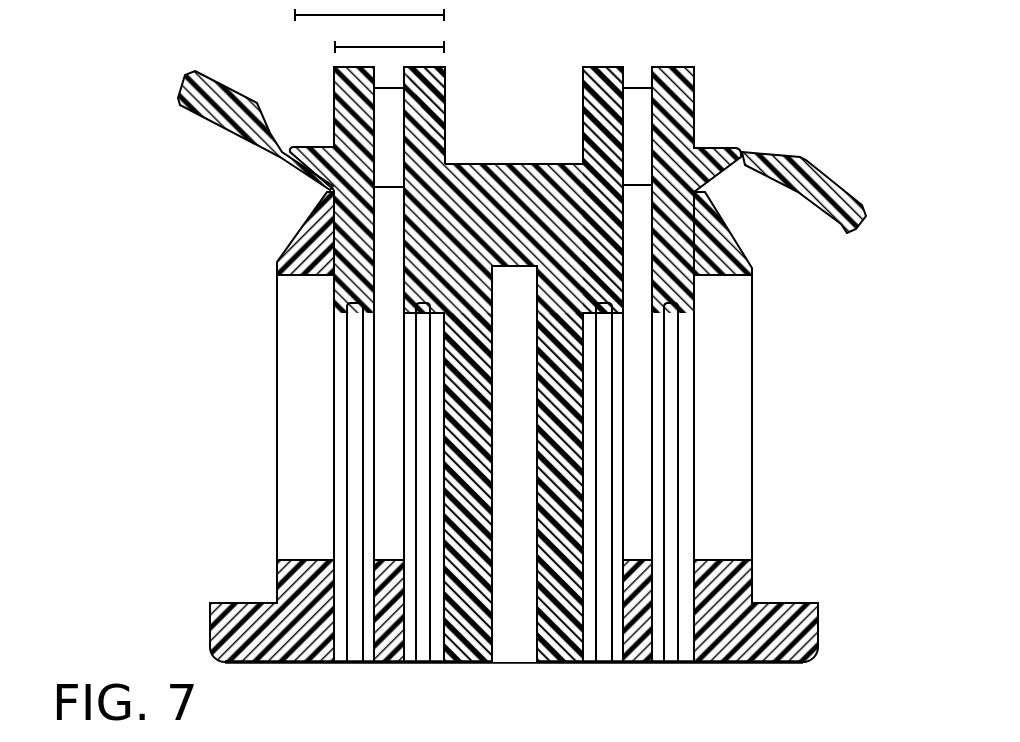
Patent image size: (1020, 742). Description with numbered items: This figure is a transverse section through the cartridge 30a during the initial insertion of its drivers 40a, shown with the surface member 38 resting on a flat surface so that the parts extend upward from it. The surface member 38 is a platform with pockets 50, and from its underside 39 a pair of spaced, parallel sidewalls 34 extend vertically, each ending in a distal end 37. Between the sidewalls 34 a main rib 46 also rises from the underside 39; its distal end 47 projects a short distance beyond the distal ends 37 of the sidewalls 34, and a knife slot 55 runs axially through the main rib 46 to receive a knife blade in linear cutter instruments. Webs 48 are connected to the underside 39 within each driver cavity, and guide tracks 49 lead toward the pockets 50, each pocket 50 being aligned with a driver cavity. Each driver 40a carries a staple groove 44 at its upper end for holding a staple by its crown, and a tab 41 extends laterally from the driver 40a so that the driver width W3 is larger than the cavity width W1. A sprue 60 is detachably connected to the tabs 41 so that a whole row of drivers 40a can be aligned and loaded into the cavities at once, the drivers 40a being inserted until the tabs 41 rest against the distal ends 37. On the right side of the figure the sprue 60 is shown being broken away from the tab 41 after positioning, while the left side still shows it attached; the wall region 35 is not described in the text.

The cartridge 30a is at (755, 427).
The sidewall 34 is at (283, 572).
The side wall 35 is at (297, 422).
The distal end 37 is at (730, 243).
The surface member 38 is at (753, 647).
The underside 39 is at (752, 600).
The driver 40a is at (687, 95).
The tab 41 is at (303, 168).
The staple groove 44 is at (672, 304).
The main rib 46 is at (452, 160).
The distal end 47 is at (530, 170).
The web 48 is at (390, 653).
The guide track 49 is at (340, 653).
The pocket 50 is at (618, 662).
The knife slot 55 is at (527, 652).
The sprue 60 is at (205, 100).
The cavity width W1 is at (420, 48).
The driver width W3 is at (318, 15).